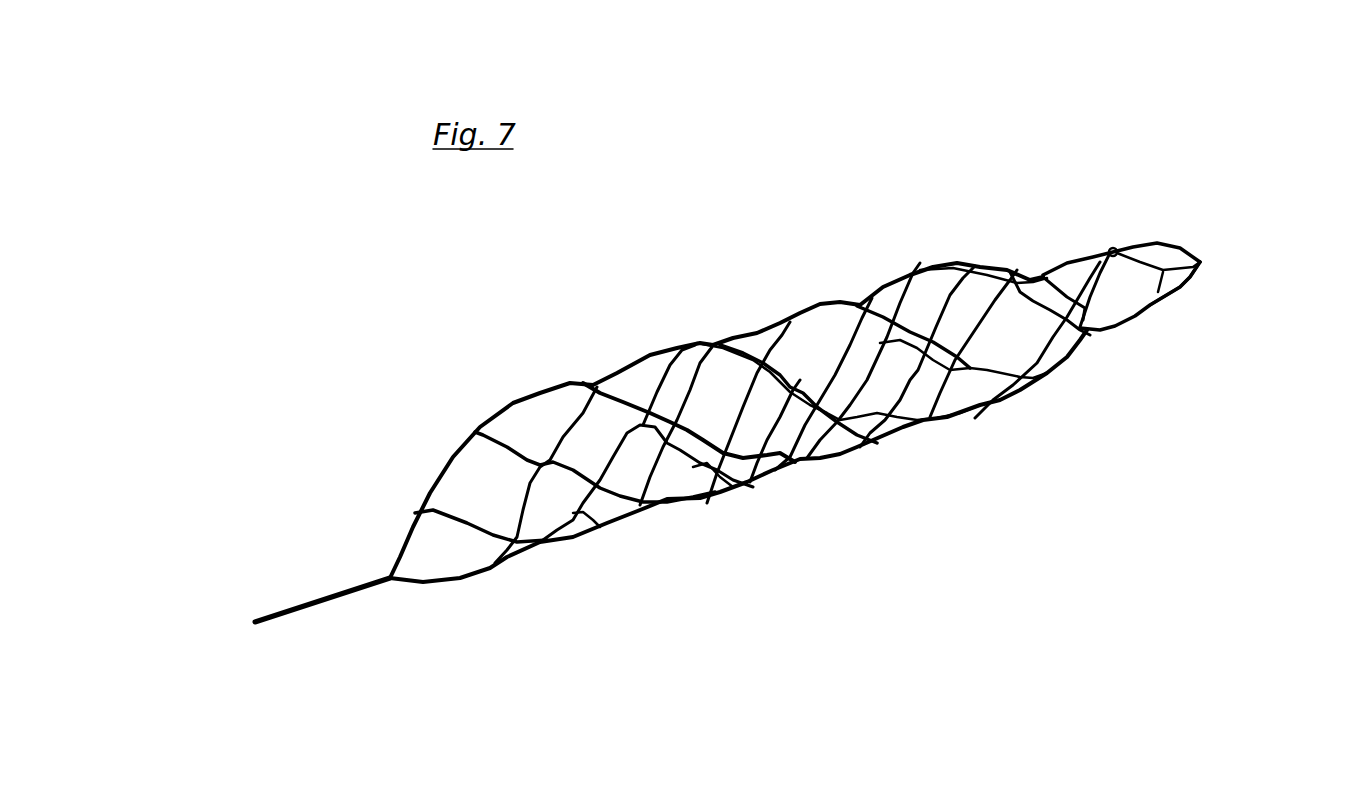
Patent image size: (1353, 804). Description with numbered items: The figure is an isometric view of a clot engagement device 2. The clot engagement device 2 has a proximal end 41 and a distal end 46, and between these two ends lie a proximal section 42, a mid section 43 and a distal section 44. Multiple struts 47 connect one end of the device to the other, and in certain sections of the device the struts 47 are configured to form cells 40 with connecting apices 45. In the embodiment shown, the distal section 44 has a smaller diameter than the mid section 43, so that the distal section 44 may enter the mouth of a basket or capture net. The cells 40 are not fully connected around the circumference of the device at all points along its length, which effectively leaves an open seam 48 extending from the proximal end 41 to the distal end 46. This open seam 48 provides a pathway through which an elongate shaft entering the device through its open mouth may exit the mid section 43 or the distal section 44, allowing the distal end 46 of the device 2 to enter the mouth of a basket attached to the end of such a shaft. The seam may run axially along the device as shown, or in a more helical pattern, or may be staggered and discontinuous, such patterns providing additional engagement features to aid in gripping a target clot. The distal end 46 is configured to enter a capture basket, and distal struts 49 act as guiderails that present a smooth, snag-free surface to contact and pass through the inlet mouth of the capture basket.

The clot engagement device 2 is at (832, 176).
The cells 40 is at (448, 487).
The proximal end 41 is at (337, 590).
The proximal section 42 is at (494, 612).
The mid section 43 is at (608, 332).
The distal section 44 is at (1077, 212).
The connecting apices 45 is at (538, 463).
The distal end 46 is at (1195, 255).
The struts 47 is at (759, 318).
The open seam 48 is at (695, 453).
The distal struts 49 is at (1180, 288).